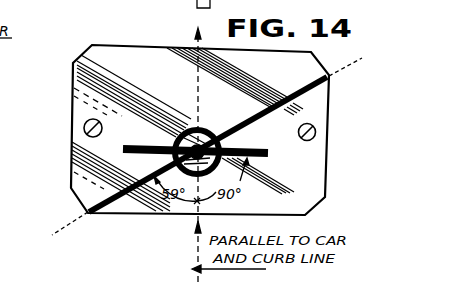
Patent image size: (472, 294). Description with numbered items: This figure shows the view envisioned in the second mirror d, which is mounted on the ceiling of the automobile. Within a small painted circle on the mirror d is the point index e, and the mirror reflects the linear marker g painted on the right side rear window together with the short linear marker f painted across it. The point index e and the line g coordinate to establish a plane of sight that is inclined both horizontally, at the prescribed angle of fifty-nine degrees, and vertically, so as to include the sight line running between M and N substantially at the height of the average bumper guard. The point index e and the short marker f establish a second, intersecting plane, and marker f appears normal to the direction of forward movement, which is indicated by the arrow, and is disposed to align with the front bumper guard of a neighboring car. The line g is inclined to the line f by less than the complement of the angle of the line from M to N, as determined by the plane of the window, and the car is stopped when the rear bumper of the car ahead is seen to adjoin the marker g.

The second mirror d is at (77, 66).
The point index e is at (200, 129).
The short linear marker f is at (204, 154).
The linear marker g is at (298, 91).
The line MVN end point M is at (355, 62).
The line MVN end point N is at (58, 232).